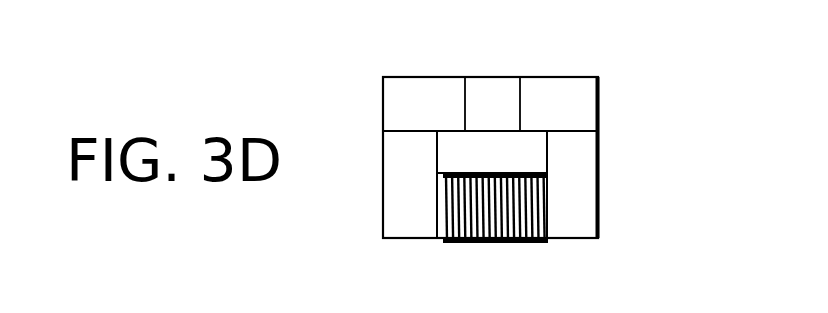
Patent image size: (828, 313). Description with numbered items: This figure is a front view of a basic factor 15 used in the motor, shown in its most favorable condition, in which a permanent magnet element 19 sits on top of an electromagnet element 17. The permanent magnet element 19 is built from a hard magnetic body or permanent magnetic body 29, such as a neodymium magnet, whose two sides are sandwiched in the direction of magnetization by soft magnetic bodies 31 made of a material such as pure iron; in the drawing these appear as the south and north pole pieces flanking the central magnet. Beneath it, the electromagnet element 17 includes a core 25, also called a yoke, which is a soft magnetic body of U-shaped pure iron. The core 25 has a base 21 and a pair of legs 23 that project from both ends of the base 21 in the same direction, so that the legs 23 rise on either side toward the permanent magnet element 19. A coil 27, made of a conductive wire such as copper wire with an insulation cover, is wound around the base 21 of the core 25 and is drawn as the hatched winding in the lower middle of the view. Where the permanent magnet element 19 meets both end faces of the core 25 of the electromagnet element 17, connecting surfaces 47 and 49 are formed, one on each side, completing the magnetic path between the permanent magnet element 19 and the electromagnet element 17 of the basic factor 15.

The basic factor 15 is at (599, 67).
The electromagnet element 17 is at (601, 200).
The permanent magnet element 19 is at (601, 93).
The base 21 is at (445, 243).
The legs 23 is at (383, 180).
The core 25 is at (603, 236).
The coil 27 is at (506, 172).
The permanent magnetic body 29 is at (487, 78).
The soft magnetic bodies 31 is at (423, 78).
The connecting surface 47 is at (380, 131).
The connecting surface 49 is at (601, 130).